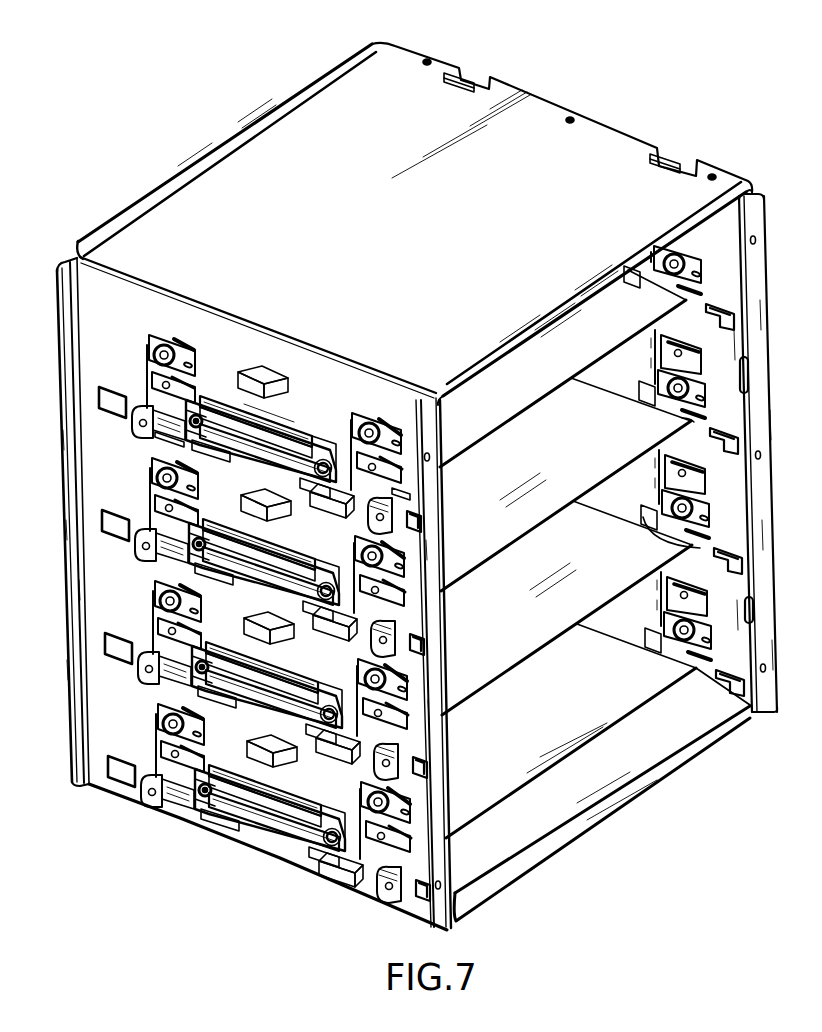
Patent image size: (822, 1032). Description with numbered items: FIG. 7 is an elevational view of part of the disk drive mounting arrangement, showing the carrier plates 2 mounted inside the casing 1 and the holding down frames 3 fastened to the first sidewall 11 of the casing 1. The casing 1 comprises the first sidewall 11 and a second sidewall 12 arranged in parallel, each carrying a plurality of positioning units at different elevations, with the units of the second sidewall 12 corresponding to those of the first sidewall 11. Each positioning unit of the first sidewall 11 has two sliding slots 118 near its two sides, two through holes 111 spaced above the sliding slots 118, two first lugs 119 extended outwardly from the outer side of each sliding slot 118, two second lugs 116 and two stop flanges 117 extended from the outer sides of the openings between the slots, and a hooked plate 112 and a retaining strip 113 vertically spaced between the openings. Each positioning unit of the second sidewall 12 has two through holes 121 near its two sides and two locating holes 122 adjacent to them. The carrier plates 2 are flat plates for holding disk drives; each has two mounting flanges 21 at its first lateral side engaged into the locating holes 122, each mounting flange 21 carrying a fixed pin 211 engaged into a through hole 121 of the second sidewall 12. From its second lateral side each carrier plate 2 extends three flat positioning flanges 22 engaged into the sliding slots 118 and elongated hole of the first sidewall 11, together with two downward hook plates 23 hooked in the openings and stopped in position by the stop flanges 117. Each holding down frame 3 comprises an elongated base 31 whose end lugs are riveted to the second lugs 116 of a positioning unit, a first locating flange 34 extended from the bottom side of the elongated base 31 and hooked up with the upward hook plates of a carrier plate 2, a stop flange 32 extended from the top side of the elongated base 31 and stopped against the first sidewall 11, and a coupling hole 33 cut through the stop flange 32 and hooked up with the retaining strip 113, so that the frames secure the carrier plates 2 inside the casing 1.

The casing 1 is at (523, 86).
The carrier plate 2 is at (663, 308).
The holding down frame 3 is at (229, 390).
The first sidewall 11 is at (100, 613).
The second sidewall 12 is at (730, 523).
The mounting flange 21 is at (660, 283).
The flat positioning flange 22 is at (163, 435).
The downward hook plate 23 is at (198, 456).
The elongated base 31 is at (205, 400).
The stop flange 32 is at (310, 428).
The coupling hole 33 is at (250, 430).
The first locating flange 34 is at (163, 423).
The through hole 111 is at (164, 345).
The hooked plate 112 is at (263, 370).
The retaining strip 113 is at (277, 398).
The second lug 116 is at (318, 472).
The stop flange 117 is at (343, 505).
The sliding slot 118 is at (150, 390).
The first lug 119 is at (143, 423).
The through hole 121 is at (690, 510).
The locating hole 122 is at (700, 548).
The fixed pin 211 is at (680, 262).